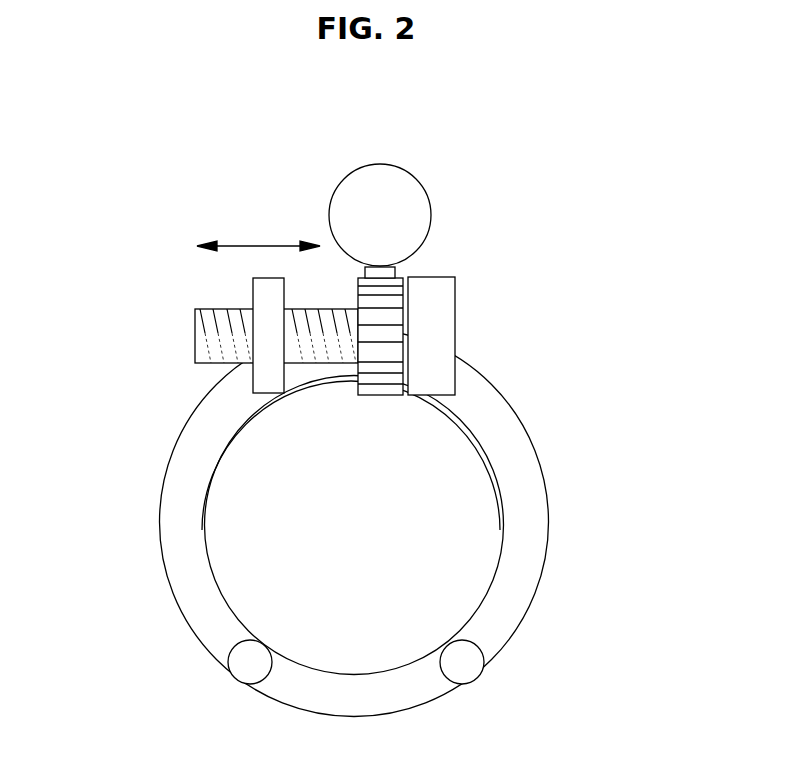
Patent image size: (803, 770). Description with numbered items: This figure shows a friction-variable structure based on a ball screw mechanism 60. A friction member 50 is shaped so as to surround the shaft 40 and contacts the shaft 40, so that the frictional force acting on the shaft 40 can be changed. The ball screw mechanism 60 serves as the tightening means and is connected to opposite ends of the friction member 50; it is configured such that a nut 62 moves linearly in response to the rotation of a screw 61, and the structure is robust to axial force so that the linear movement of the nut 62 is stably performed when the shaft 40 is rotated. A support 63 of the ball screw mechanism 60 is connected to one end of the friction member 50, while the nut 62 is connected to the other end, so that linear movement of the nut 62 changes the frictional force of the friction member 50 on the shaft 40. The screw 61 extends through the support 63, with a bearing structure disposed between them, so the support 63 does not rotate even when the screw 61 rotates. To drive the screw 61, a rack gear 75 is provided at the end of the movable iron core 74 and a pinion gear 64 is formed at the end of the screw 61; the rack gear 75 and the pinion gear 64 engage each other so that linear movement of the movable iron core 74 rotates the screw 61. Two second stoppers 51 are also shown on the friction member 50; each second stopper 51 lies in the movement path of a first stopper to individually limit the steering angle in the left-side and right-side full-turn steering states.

The shaft 40 is at (245, 530).
The friction member 50 is at (525, 532).
The second stopper 51 is at (245, 667).
The ball screw mechanism 60 is at (354, 291).
The screw 61 is at (330, 340).
The nut 62 is at (263, 287).
The support 63 is at (445, 322).
The pinion gear 64 is at (395, 283).
The movable iron core 74 is at (358, 192).
The rack gear 75 is at (384, 270).